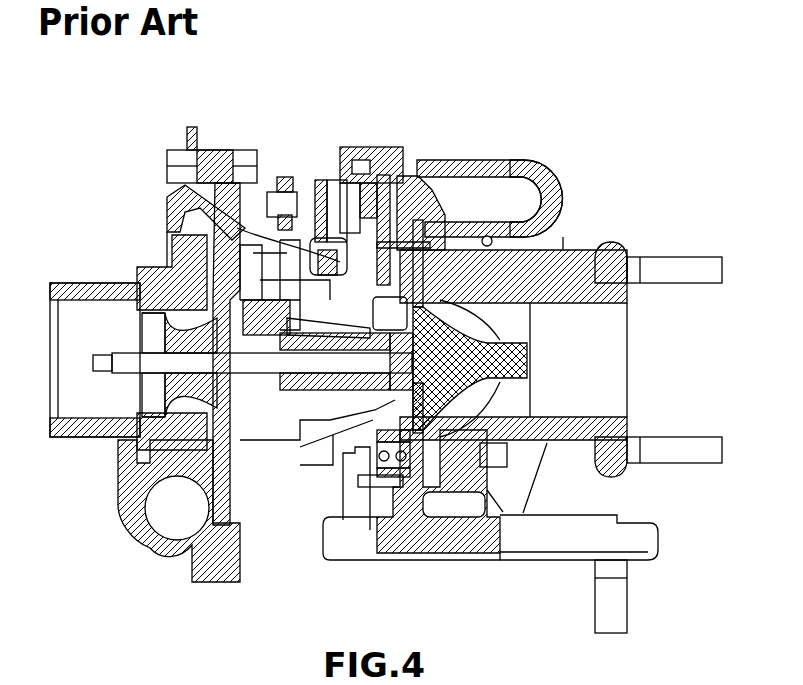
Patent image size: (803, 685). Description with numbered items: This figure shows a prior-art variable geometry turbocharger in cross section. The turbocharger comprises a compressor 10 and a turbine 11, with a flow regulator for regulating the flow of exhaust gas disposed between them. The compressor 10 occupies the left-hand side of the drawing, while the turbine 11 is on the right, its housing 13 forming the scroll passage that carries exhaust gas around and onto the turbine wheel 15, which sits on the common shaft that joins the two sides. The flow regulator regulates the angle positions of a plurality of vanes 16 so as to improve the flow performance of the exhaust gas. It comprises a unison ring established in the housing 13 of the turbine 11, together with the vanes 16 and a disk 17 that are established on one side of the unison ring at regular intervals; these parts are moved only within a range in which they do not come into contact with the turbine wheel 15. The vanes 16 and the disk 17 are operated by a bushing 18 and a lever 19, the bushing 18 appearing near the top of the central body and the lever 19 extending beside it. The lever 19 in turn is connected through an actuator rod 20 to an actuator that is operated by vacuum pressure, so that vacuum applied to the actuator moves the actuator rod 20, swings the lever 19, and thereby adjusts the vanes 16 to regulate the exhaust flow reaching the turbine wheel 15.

The compressor 10 is at (150, 206).
The turbine 11 is at (542, 166).
The housing 13 is at (448, 161).
The turbine wheel 15 is at (530, 353).
The vanes 16 is at (410, 176).
The disk 17 is at (360, 166).
The bushing 18 is at (222, 150).
The lever 19 is at (315, 187).
The actuator rod 20 is at (289, 175).